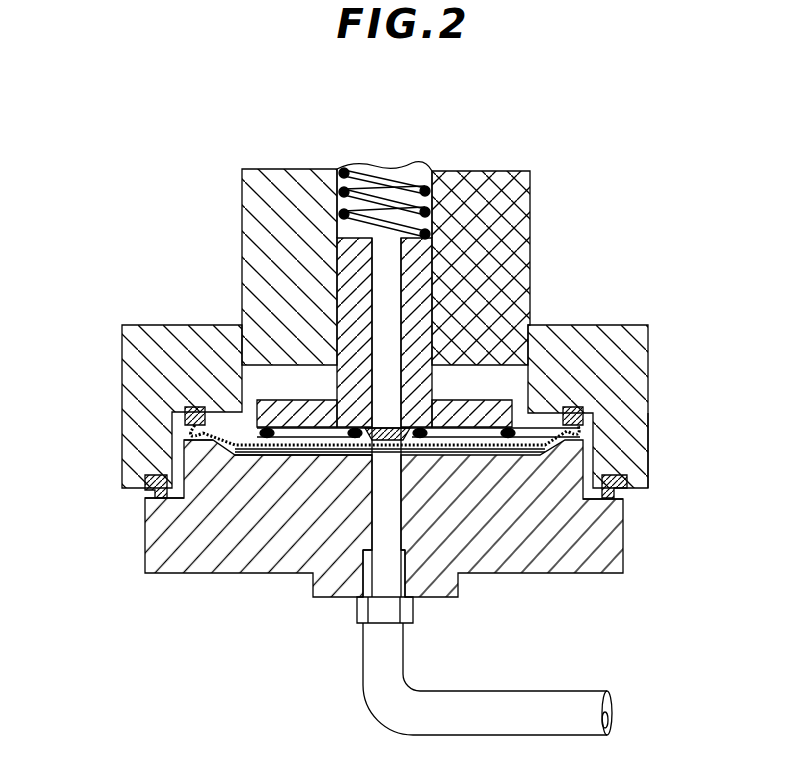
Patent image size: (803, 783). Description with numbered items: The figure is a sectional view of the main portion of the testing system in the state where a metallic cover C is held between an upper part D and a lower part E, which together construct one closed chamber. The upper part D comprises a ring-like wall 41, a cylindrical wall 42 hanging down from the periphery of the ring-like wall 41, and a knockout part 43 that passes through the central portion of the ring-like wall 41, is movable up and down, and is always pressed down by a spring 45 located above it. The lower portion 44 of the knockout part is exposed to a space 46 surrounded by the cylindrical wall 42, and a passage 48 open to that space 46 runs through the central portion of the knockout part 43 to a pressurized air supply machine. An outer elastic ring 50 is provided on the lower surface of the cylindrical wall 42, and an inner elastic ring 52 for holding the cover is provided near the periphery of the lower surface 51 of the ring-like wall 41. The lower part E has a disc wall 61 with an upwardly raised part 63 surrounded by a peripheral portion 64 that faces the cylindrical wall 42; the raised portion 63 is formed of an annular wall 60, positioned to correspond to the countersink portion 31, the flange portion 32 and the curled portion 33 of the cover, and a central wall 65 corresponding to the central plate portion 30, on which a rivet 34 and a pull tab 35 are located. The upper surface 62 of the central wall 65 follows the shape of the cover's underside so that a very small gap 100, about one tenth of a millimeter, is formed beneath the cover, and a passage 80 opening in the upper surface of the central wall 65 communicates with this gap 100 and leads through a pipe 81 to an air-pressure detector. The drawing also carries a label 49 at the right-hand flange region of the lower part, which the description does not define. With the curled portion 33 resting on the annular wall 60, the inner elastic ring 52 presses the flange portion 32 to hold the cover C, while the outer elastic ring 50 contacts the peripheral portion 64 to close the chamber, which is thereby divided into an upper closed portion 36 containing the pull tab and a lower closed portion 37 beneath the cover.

The central plate portion 30 is at (453, 345).
The countersink portion 31 is at (535, 450).
The flange portion 32 is at (570, 447).
The curled portion 33 is at (590, 445).
The rivet 34 is at (388, 275).
The pull tab 35 is at (531, 177).
The upper closed portion 36 is at (227, 428).
The lower closed portion 37 is at (283, 457).
The ring-like wall 41 is at (597, 343).
The cylindrical wall 42 is at (637, 436).
The knockout part 43 is at (358, 263).
The lower portion of knockout part 44 is at (278, 400).
The spring 45 is at (403, 185).
The space 46 is at (183, 440).
The passage 48 is at (374, 328).
The lower housing flange 49 is at (628, 497).
The outer elastic ring 50 is at (612, 478).
The lower surface of ring-like wall 51 is at (537, 418).
The inner elastic ring 52 is at (585, 413).
The annular wall 60 is at (197, 450).
The disc wall 61 is at (222, 470).
The upper surface of central wall 62 is at (312, 453).
The upwardly raised part 63 is at (111, 487).
The peripheral portion 64 is at (170, 531).
The central wall 65 is at (200, 507).
The passage 80 is at (393, 528).
The pipe 81 is at (482, 723).
The gap 100 is at (364, 456).
The metallic cover C is at (270, 468).
The upper part D is at (566, 297).
The lower part E is at (625, 582).